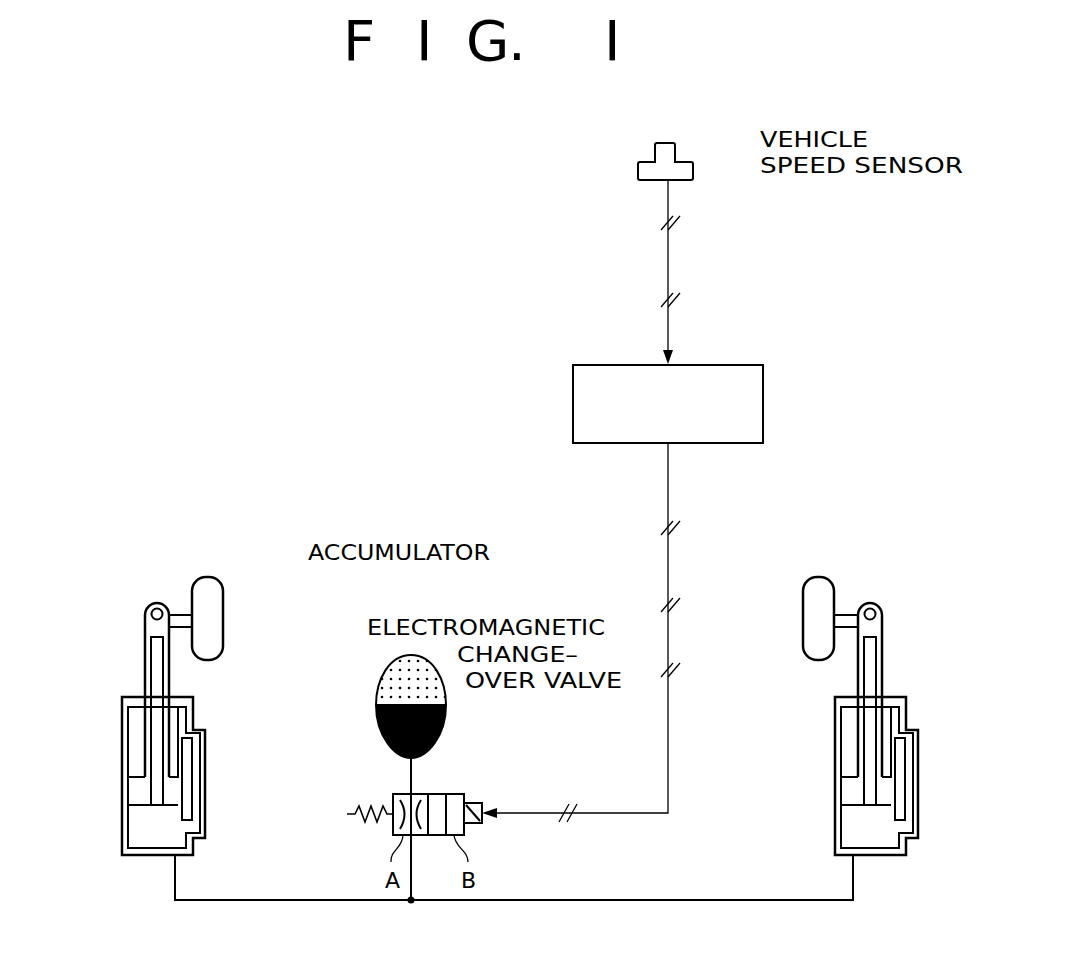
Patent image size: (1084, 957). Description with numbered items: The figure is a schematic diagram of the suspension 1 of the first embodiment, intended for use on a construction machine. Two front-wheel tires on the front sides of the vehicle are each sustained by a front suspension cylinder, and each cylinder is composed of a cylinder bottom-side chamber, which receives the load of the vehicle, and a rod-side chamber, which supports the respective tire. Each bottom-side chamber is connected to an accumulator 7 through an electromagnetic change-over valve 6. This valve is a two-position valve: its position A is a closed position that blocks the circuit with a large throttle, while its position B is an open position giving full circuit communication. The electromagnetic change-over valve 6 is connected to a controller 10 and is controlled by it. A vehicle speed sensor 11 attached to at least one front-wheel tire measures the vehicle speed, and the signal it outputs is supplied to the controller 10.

The suspension 1 is at (328, 285).
The electromagnetic change-over valve 6 is at (455, 793).
The accumulator 7 is at (385, 683).
The controller 10 is at (764, 405).
The vehicle speed sensor 11 is at (677, 152).